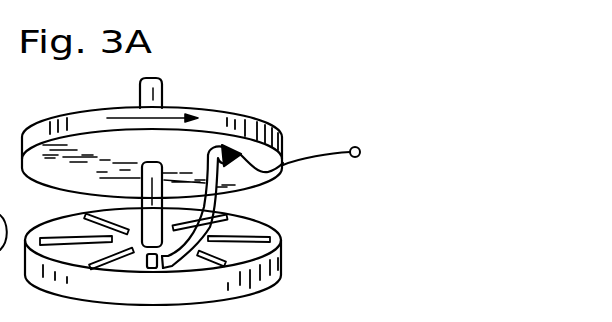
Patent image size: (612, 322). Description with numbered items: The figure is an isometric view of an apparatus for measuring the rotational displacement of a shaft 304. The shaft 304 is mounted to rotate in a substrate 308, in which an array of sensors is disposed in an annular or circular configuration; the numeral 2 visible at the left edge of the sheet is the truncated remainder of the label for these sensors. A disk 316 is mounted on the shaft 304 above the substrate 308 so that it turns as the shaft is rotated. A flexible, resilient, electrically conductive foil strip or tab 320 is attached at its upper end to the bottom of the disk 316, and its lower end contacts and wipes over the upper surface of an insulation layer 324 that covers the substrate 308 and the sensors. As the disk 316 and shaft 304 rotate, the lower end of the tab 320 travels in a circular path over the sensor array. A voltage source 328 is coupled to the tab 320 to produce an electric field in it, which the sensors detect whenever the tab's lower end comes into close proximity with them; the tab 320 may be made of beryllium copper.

The shaft 304 is at (160, 95).
The disk 316 is at (258, 125).
The voltage source 328 is at (355, 147).
The tab 320 is at (267, 203).
The insulation layer 324 is at (283, 243).
The substrate 308 is at (283, 268).
The slot 2 is at (48, 238).